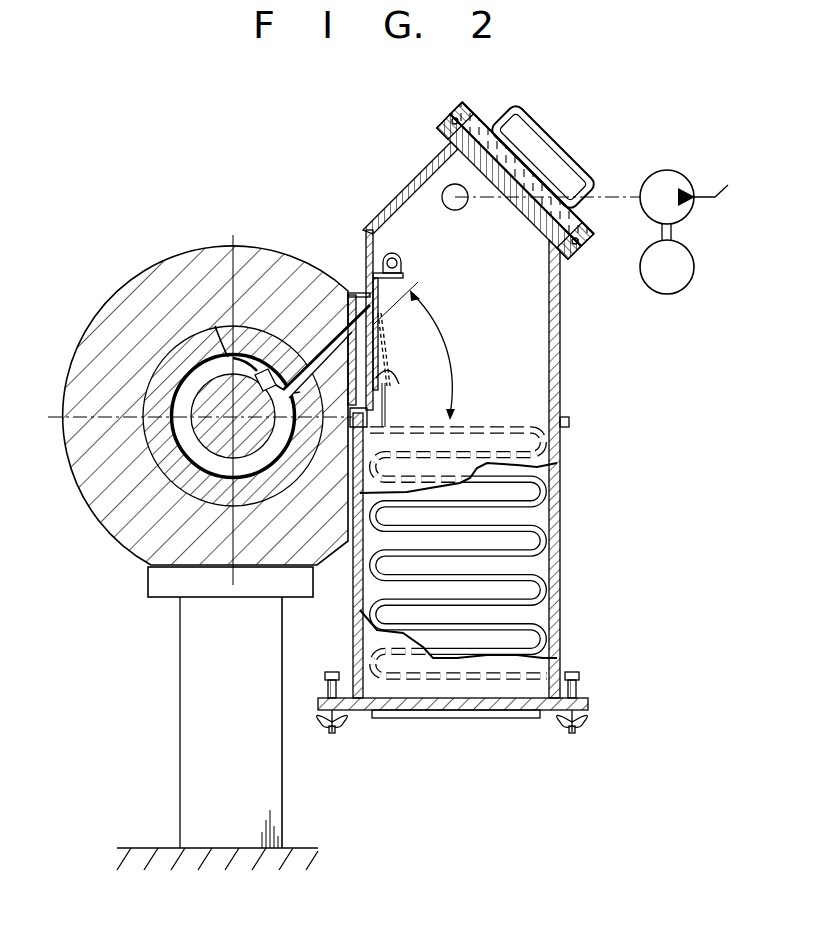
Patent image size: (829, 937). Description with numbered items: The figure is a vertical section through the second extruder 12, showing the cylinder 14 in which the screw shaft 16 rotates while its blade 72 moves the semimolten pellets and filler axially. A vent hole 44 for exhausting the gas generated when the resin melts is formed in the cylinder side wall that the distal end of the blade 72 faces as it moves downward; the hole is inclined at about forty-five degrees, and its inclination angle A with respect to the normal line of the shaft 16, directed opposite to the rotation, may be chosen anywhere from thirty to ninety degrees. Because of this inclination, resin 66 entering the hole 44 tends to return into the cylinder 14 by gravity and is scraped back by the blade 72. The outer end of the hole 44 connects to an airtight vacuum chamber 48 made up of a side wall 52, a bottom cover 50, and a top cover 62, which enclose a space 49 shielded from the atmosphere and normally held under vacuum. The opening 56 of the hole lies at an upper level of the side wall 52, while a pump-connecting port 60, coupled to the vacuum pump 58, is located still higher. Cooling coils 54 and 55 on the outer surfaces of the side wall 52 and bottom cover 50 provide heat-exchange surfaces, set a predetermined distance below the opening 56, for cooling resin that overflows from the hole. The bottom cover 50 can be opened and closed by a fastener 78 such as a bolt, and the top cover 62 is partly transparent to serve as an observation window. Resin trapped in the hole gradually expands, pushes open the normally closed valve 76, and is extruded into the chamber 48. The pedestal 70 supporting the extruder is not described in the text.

The extruder 12 is at (171, 246).
The cylinder 14 is at (153, 401).
The shaft 16 is at (210, 437).
The vent hole 44 is at (352, 318).
The airtight vacuum chamber 48 is at (566, 378).
The space 49 is at (489, 303).
The bottom cover 50 is at (480, 711).
The side wall 52 is at (562, 322).
The cooling coil 54 is at (548, 522).
The cooling coil 55 is at (433, 719).
The opening 56 is at (352, 294).
The vacuum pump 58 is at (665, 170).
The pump-connecting port 60 is at (444, 196).
The top cover 62 is at (541, 165).
The resin 66 is at (379, 334).
The pedestal 70 is at (181, 712).
The blade 72 is at (215, 326).
The normally closed valve 76 is at (403, 398).
The fastener 78 is at (572, 733).
The inclination angle A is at (435, 355).